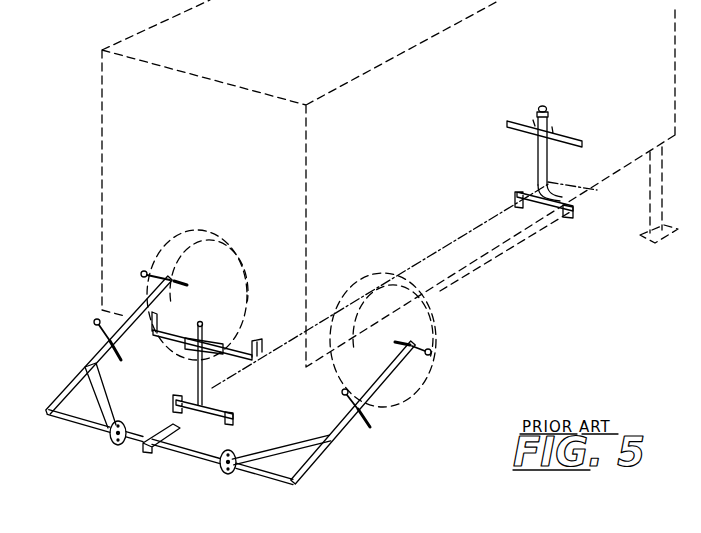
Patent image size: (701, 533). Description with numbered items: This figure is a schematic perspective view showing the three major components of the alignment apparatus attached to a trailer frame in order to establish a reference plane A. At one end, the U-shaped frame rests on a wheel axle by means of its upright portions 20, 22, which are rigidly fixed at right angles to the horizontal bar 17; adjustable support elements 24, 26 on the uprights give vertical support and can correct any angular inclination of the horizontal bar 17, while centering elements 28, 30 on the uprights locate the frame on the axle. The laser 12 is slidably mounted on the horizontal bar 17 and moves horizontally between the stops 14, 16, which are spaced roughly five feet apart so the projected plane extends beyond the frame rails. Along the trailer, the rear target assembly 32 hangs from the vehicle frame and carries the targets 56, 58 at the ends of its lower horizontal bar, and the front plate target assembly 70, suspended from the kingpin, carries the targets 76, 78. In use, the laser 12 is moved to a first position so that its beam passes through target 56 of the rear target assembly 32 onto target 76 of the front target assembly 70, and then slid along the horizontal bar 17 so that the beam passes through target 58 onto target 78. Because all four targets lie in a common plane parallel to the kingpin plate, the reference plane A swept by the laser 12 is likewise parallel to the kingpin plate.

The laser 12 is at (157, 455).
The stop 14 is at (115, 445).
The stop 16 is at (230, 473).
The horizontal bar 17 is at (83, 423).
The upright portion 20 is at (68, 383).
The upright portion 22 is at (347, 425).
The adjustable support element 24 is at (92, 336).
The adjustable support element 26 is at (373, 418).
The centering element 28 is at (188, 284).
The centering element 30 is at (428, 340).
The rear target assembly 32 is at (243, 335).
The target 56 is at (173, 405).
The target 58 is at (235, 417).
The front plate target assembly 70 is at (582, 115).
The target 76 is at (517, 200).
The target 78 is at (573, 215).
The reference plane A is at (430, 248).